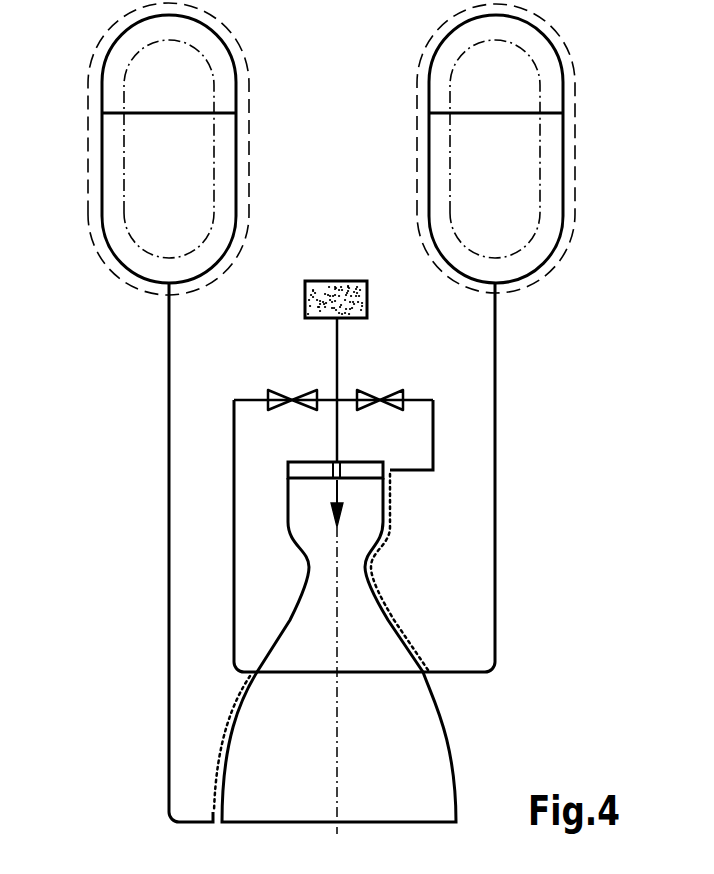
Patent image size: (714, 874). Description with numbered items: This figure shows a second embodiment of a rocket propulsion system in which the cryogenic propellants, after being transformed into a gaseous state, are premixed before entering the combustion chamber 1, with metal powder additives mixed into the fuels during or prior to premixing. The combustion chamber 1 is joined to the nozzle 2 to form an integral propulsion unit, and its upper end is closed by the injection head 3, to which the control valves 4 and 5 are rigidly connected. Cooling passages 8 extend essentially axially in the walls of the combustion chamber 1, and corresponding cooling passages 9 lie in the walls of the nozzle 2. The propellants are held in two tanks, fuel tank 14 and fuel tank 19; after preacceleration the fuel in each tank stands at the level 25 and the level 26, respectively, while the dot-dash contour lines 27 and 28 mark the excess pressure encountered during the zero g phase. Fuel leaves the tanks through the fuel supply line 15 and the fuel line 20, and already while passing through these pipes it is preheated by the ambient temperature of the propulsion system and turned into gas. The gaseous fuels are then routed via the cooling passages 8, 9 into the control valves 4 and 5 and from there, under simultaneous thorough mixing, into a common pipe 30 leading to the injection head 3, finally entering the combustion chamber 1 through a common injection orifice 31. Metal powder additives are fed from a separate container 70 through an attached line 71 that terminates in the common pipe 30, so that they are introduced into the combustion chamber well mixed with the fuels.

The combustion chamber 1 is at (308, 567).
The nozzle 2 is at (446, 742).
The injection head 3 is at (297, 470).
The control valve 4 is at (297, 400).
The control valve 5 is at (393, 398).
The cooling passages 8 is at (371, 567).
The cooling passages 9 is at (223, 742).
The fuel tank 14 is at (102, 228).
The fuel supply line 15 is at (168, 462).
The fuel tank 19 is at (563, 220).
The fuel line 20 is at (496, 465).
The fuel level 25 is at (168, 112).
The fuel level 26 is at (496, 112).
The dot-dash contour line 27 is at (126, 73).
The dot-dash contour line 28 is at (538, 90).
The common pipe 30 is at (338, 440).
The common injection orifice 31 is at (340, 478).
The separate container 70 is at (355, 297).
The line 71 is at (338, 352).